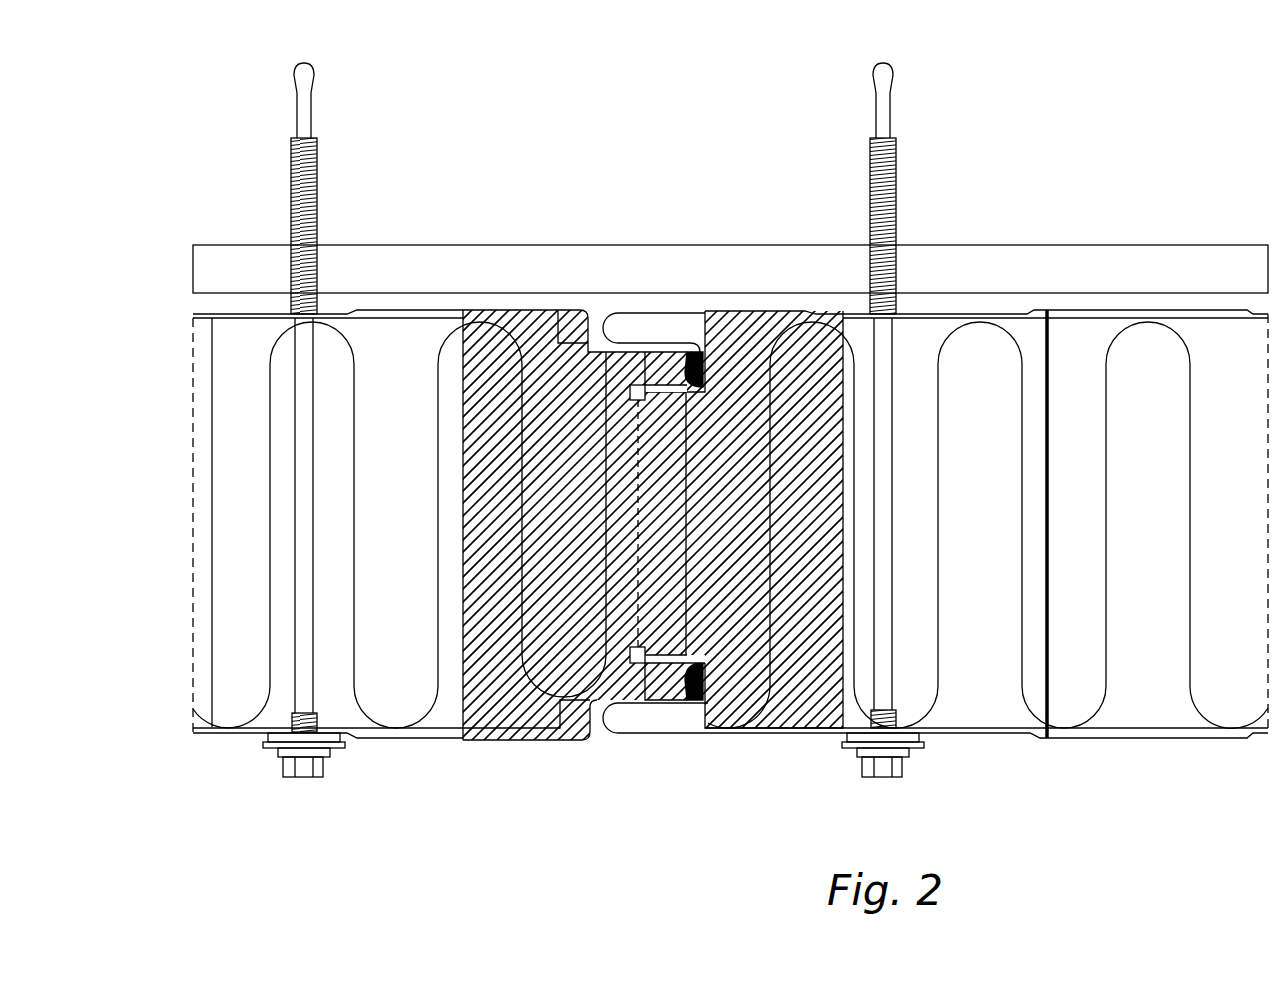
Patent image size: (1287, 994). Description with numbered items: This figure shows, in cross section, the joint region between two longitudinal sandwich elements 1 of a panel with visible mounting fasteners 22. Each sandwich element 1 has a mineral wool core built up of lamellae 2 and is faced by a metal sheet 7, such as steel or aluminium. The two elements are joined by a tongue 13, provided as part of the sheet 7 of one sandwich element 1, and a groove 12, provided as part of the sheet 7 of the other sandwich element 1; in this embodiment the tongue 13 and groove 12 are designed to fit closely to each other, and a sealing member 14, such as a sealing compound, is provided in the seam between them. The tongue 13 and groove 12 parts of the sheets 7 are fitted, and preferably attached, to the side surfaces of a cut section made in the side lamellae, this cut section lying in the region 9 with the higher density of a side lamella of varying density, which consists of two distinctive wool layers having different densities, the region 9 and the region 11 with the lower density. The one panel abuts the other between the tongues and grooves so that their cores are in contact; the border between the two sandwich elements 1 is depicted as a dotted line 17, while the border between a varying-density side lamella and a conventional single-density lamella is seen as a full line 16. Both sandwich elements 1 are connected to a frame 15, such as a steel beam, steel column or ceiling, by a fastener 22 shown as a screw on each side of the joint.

The longitudinal sandwich element 1 is at (1198, 747).
The lamellae 2 is at (965, 743).
The sheet 7 is at (497, 748).
The region with the higher density 9 is at (566, 561).
The region with the lower density 11 is at (406, 561).
The groove 12 is at (692, 695).
The tongue 13 is at (648, 697).
The sealing member 14 is at (700, 357).
The frame 15 is at (1203, 286).
The full line 16 is at (1047, 457).
The dotted line 17 is at (640, 490).
The fastener 22 is at (890, 185).